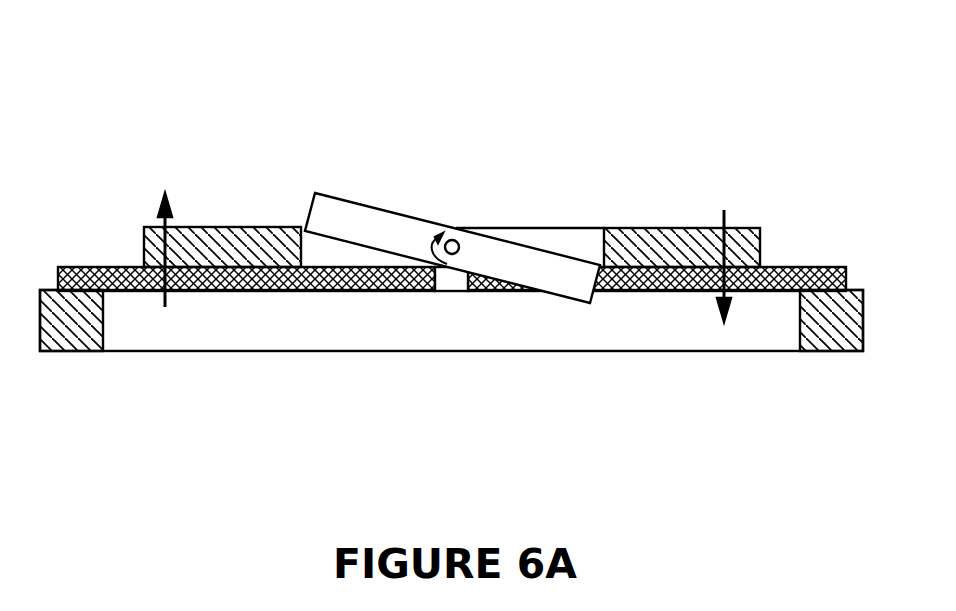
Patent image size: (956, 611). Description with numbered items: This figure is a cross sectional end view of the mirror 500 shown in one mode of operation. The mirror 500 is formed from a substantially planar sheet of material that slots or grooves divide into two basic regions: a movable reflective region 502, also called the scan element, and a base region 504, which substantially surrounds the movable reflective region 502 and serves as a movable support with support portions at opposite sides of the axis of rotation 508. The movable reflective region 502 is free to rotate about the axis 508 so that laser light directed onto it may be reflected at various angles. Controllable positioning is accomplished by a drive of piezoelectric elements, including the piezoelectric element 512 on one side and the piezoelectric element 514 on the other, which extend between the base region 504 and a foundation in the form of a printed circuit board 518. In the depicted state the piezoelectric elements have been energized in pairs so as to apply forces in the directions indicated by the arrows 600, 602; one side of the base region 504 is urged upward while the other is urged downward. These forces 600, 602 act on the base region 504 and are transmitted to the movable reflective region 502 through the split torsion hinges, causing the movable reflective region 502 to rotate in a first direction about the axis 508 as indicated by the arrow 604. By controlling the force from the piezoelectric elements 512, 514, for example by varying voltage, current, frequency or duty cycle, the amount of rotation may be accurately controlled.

The mirror 500 is at (451, 253).
The movable reflective region 502 is at (372, 215).
The base region 504 is at (673, 229).
The axis of rotation 508 is at (452, 255).
The piezoelectric element 512 is at (108, 267).
The piezoelectric element 514 is at (800, 268).
The printed circuit board 518 is at (833, 352).
The arrow indicating force direction 600 is at (165, 296).
The arrow indicating force direction 602 is at (722, 312).
The arrow indicating rotation direction 604 is at (438, 256).